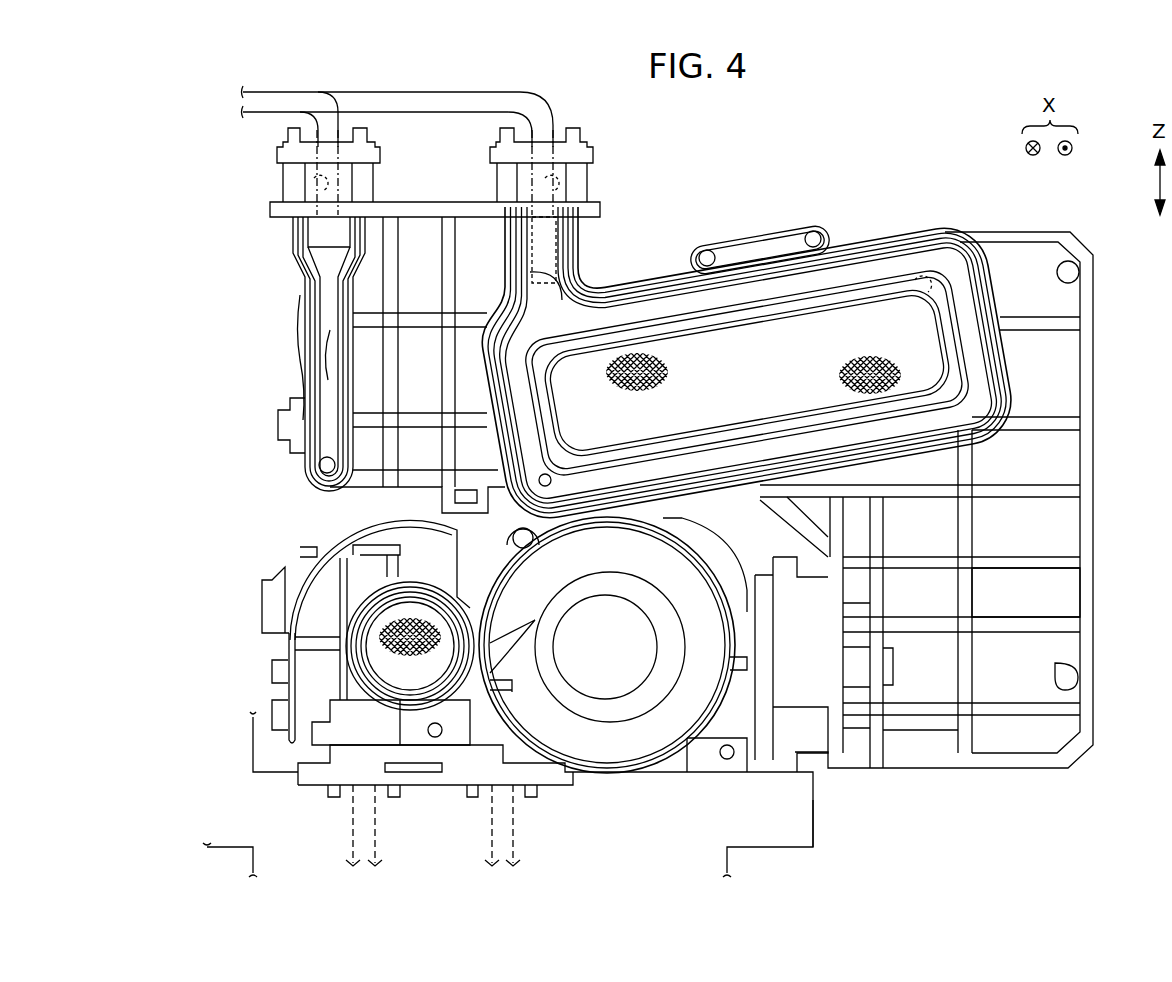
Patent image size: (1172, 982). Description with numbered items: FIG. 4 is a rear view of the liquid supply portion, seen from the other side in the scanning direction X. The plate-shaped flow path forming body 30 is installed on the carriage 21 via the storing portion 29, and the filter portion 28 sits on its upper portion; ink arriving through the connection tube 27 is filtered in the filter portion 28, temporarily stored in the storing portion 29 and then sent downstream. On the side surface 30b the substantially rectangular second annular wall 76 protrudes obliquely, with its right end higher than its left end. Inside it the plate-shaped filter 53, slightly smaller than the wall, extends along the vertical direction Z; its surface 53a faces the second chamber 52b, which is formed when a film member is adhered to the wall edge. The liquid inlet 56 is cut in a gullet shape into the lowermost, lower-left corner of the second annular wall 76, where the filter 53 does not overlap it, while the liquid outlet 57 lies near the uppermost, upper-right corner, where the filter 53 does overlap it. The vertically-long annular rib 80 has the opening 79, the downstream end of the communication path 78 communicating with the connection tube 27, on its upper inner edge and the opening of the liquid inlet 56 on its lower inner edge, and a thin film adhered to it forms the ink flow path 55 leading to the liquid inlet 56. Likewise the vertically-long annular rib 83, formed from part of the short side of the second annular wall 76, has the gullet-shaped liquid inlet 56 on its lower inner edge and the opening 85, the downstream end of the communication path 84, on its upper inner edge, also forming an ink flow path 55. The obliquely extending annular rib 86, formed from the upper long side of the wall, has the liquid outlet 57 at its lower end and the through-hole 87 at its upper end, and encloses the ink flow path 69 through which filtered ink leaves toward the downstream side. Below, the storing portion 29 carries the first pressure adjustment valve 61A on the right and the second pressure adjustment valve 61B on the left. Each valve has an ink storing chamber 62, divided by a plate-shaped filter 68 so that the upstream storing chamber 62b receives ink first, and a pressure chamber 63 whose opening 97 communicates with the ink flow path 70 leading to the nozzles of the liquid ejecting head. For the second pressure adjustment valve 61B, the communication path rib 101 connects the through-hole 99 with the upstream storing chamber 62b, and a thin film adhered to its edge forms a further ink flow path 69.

The carriage 21 is at (815, 832).
The connection tube 27 is at (332, 100).
The filter portion 28 is at (956, 217).
The storing portion 29 is at (264, 654).
The flow path forming body 30 is at (1095, 522).
The side surface 30b is at (1060, 588).
The second chamber 52b is at (950, 370).
The filter 53 is at (966, 308).
The surface of the filter 53a is at (975, 350).
The ink flow path 55 is at (326, 378).
The liquid inlet 56 is at (320, 467).
The liquid outlet 57 is at (690, 262).
The first pressure adjustment valve 61A is at (700, 557).
The second pressure adjustment valve 61B is at (385, 530).
The ink storing chamber 62 is at (363, 690).
The upstream storing chamber 62b is at (410, 637).
The pressure chamber 63 is at (660, 745).
The filter 68 is at (455, 700).
The ink flow path 69 is at (740, 248).
The ink flow path 70 is at (370, 820).
The second annular wall 76 is at (880, 240).
The communication path 78 is at (318, 184).
The opening 79 is at (312, 230).
The annular rib 80 is at (298, 292).
The annular rib 83 is at (478, 352).
The communication path 84 is at (548, 182).
The opening 85 is at (570, 232).
The annular rib 86 is at (773, 238).
The through-hole 87 is at (812, 240).
The opening 97 is at (503, 670).
The through-hole 99 is at (525, 550).
The communication path rib 101 is at (458, 552).